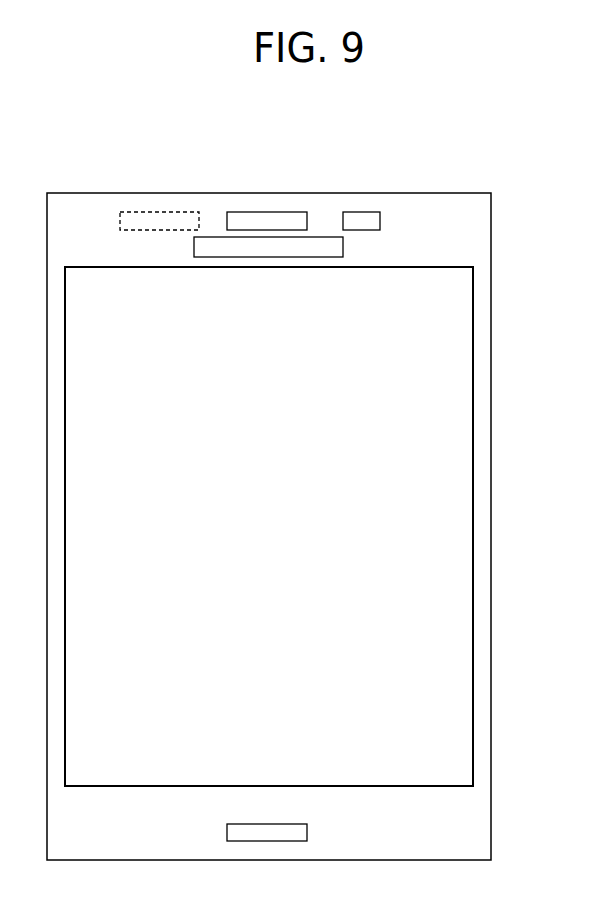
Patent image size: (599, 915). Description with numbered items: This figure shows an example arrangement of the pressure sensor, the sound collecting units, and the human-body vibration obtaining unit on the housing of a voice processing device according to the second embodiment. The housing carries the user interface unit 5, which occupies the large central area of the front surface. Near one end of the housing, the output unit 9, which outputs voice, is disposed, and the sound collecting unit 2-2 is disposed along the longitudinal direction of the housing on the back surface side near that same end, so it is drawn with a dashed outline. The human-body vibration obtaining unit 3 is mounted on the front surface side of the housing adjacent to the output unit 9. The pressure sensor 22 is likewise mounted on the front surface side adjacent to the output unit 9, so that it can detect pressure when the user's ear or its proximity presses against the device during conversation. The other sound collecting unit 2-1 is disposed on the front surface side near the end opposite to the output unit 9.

The user interface unit 5 is at (473, 708).
The sound collecting unit 2-2 is at (158, 212).
The output unit 9 is at (270, 212).
The human-body vibration obtaining unit 3 is at (363, 212).
The pressure sensor 22 is at (343, 254).
The sound collecting unit 2-1 is at (268, 841).